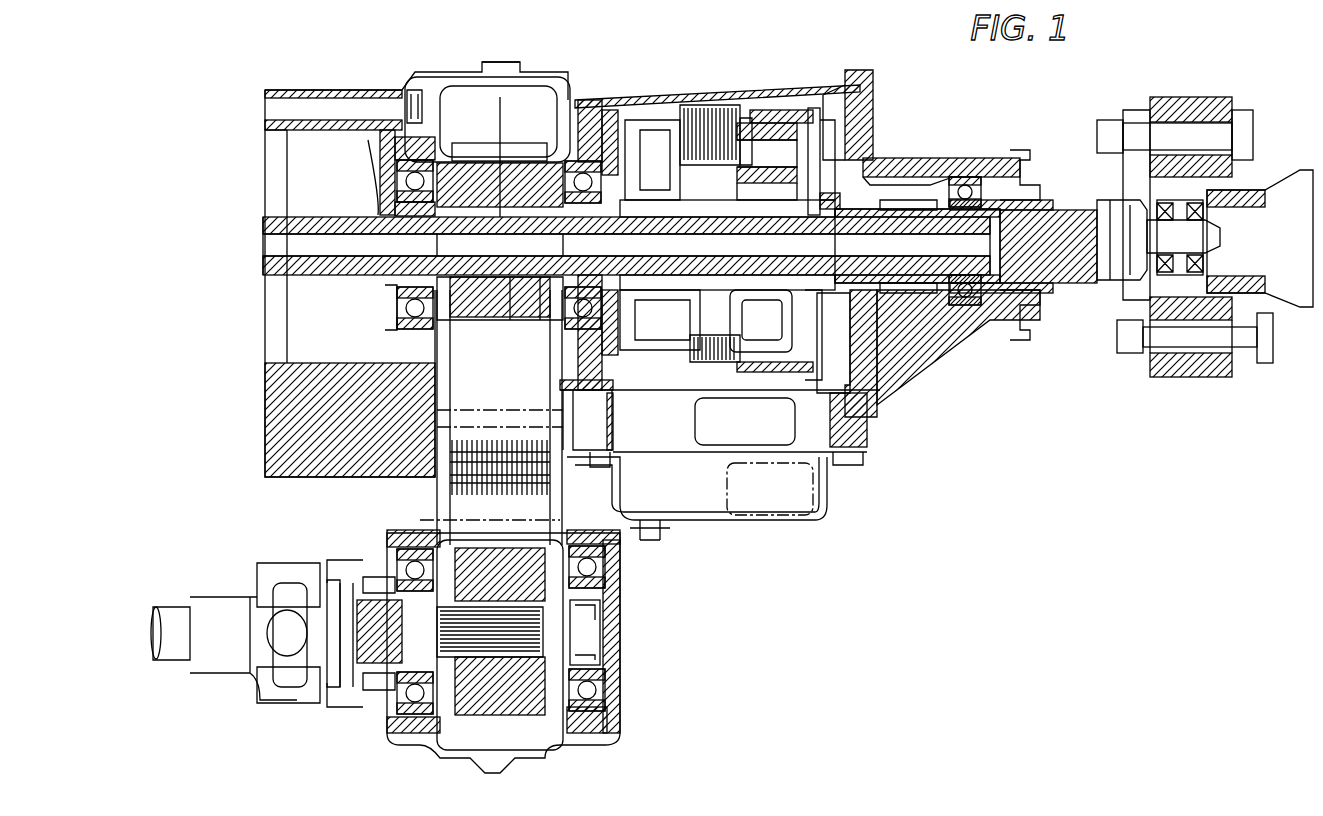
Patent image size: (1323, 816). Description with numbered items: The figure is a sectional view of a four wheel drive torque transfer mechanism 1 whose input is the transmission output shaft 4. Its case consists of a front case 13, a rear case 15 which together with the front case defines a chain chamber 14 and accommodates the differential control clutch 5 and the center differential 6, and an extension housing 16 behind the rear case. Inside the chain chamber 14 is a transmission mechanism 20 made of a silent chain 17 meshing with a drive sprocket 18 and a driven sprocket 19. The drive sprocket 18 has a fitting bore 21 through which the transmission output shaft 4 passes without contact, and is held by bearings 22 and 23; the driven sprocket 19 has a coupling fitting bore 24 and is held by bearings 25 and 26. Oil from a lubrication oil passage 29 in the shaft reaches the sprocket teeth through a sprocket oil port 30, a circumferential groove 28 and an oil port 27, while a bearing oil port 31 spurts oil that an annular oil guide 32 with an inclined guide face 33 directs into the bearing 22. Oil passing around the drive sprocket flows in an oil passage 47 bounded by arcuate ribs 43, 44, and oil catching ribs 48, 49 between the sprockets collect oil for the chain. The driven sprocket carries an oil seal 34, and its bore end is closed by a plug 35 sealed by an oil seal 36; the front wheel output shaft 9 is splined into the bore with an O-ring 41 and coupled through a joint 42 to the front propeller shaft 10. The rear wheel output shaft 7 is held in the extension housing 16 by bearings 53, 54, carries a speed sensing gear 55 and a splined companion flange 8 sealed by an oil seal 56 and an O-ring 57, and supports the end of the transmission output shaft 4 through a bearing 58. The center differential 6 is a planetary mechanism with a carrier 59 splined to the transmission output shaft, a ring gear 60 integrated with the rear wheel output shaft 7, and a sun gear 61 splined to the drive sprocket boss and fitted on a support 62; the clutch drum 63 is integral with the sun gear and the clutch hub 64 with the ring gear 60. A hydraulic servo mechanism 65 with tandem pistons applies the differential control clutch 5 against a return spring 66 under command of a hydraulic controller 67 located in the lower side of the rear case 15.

The transfer mechanism 1 is at (698, 40).
The transmission output shaft 4 is at (268, 230).
The differential control clutch 5 is at (700, 104).
The center differential 6 is at (777, 97).
The rear wheel output shaft 7 is at (1040, 275).
The companion flange 8 is at (1122, 115).
The front wheel output shaft 9 is at (345, 680).
The front propeller shaft 10 is at (160, 625).
The front case 13 is at (432, 74).
The chain chamber 14 is at (488, 394).
The rear case 15 is at (540, 66).
The extension housing 16 is at (1005, 147).
The silent chain 17 is at (505, 530).
The drive sprocket 18 is at (530, 322).
The driven sprocket 19 is at (532, 735).
The transmission mechanism 20 is at (445, 465).
The fitting bore 21 is at (512, 300).
The bearing 22 is at (404, 105).
The bearing 23 is at (585, 100).
The coupling fitting bore 24 is at (490, 700).
The bearing 25 is at (398, 555).
The bearing 26 is at (606, 706).
The oil port 27 is at (500, 135).
The circumferential groove 28 is at (482, 300).
The lubrication oil passage 29 is at (305, 243).
The sprocket oil port 30 is at (516, 232).
The bearing oil port 31 is at (373, 238).
The oil guide 32 is at (378, 197).
The guide face 33 is at (383, 297).
The oil seal 34 is at (355, 565).
The plug 35 is at (604, 620).
The oil seal 36 is at (604, 653).
The O-ring 41 is at (395, 672).
The joint 42 is at (300, 700).
The arcuate rib 43 is at (450, 130).
The arcuate rib 44 is at (525, 130).
The oil passage 47 is at (470, 86).
The oil catching rib 48 is at (476, 497).
The oil catching rib 49 is at (576, 518).
The bearing 53 is at (830, 397).
The bearing 54 is at (975, 305).
The gear 55 is at (960, 180).
The oil seal 56 is at (1040, 320).
The O-ring 57 is at (1083, 268).
The bearing 58 is at (840, 298).
The carrier 59 is at (815, 352).
The ring gear 60 is at (812, 106).
The sun gear 61 is at (760, 300).
The support 62 is at (615, 110).
The clutch drum 63 is at (722, 104).
The clutch hub 64 is at (725, 368).
The hydraulic servo mechanism 65 is at (660, 365).
The return spring 66 is at (710, 272).
The hydraulic controller 67 is at (805, 520).